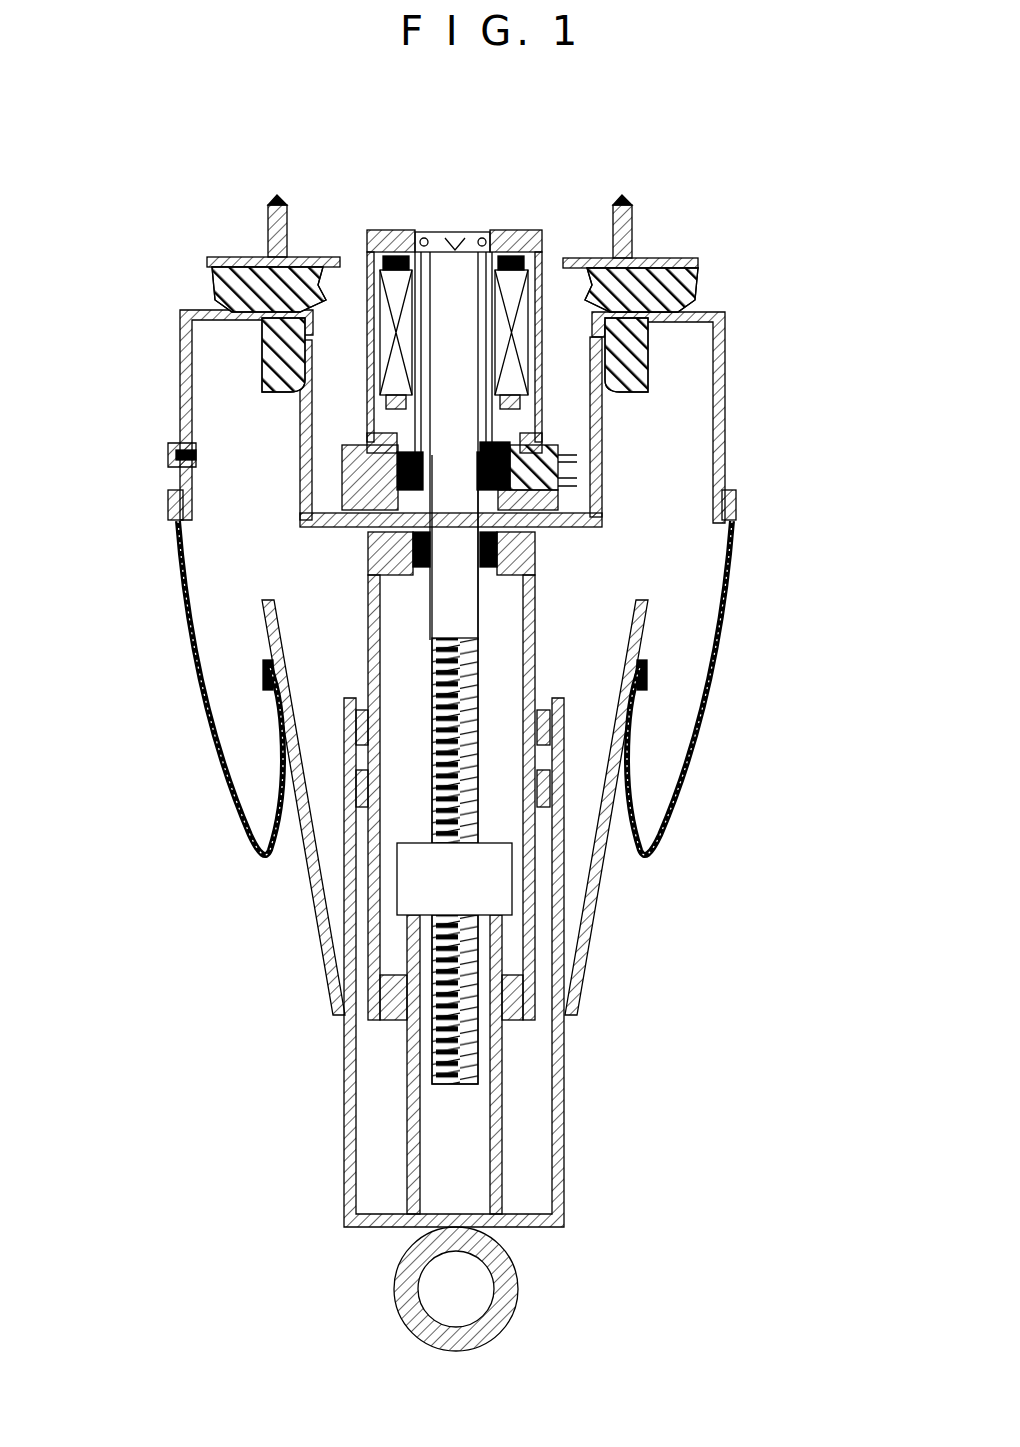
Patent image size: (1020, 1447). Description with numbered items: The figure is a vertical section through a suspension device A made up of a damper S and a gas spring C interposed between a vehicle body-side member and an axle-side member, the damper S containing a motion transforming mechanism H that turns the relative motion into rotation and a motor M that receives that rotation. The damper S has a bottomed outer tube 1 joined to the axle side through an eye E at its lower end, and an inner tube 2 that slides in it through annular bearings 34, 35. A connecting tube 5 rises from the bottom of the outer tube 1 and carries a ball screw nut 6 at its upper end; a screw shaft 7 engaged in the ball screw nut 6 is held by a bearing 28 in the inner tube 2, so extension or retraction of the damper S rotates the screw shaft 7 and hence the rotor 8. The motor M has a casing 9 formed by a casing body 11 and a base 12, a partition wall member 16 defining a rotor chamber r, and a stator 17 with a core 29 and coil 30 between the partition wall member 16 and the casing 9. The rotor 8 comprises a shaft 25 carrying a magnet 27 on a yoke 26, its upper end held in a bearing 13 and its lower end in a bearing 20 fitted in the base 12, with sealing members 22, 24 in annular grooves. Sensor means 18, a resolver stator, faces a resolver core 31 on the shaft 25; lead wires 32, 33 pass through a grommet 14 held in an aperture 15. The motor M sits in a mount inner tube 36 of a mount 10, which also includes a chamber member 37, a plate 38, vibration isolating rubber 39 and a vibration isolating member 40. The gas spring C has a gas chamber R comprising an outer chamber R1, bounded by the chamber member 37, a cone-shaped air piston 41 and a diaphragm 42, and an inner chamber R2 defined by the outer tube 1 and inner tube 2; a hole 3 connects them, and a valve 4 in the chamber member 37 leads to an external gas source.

The outer tube 1 is at (563, 1092).
The inner tube 2 is at (536, 635).
The hole 3 is at (370, 582).
The valve 4 is at (170, 448).
The connecting tube 5 is at (500, 1162).
The ball screw nut 6 is at (490, 885).
The screw shaft 7 is at (458, 1090).
The rotor 8 is at (456, 240).
The casing 9 is at (548, 258).
The mount 10 is at (240, 258).
The casing body 11 is at (538, 345).
The base 12 is at (385, 515).
The bearing 13 is at (440, 232).
The grommet 14 is at (555, 452).
The aperture 15 is at (560, 512).
The partition wall member 16 is at (418, 240).
The stator 17 is at (385, 290).
The sensor means 18 is at (345, 480).
The bearing 20 is at (412, 540).
The sealing member 22 is at (543, 242).
The sealing member 24 is at (505, 528).
The shaft 25 is at (440, 428).
The yoke 26 is at (530, 310).
The magnet 27 is at (385, 322).
The bearing 28 is at (500, 560).
The core 29 is at (395, 345).
The coil 30 is at (380, 398).
The resolver core 31 is at (505, 445).
The lead wire 32 is at (565, 455).
The lead wire 33 is at (565, 478).
The annular bearing 34 is at (550, 730).
The annular bearing 35 is at (550, 790).
The mount inner tube 36 is at (604, 505).
The chamber member 37 is at (726, 378).
The plate 38 is at (655, 255).
The vibration isolating rubber 39 is at (645, 372).
The vibration isolating member 40 is at (690, 296).
The air piston 41 is at (578, 960).
The diaphragm 42 is at (266, 860).
The suspension device A is at (730, 240).
The gas spring C is at (730, 442).
The eye E is at (518, 1288).
The motion transforming mechanism H is at (395, 876).
The motor M is at (512, 232).
The gas chamber R is at (262, 765).
The outer chamber R1 is at (253, 568).
The inner chamber R2 is at (426, 646).
The damper S is at (540, 672).
The rotor chamber r is at (478, 240).